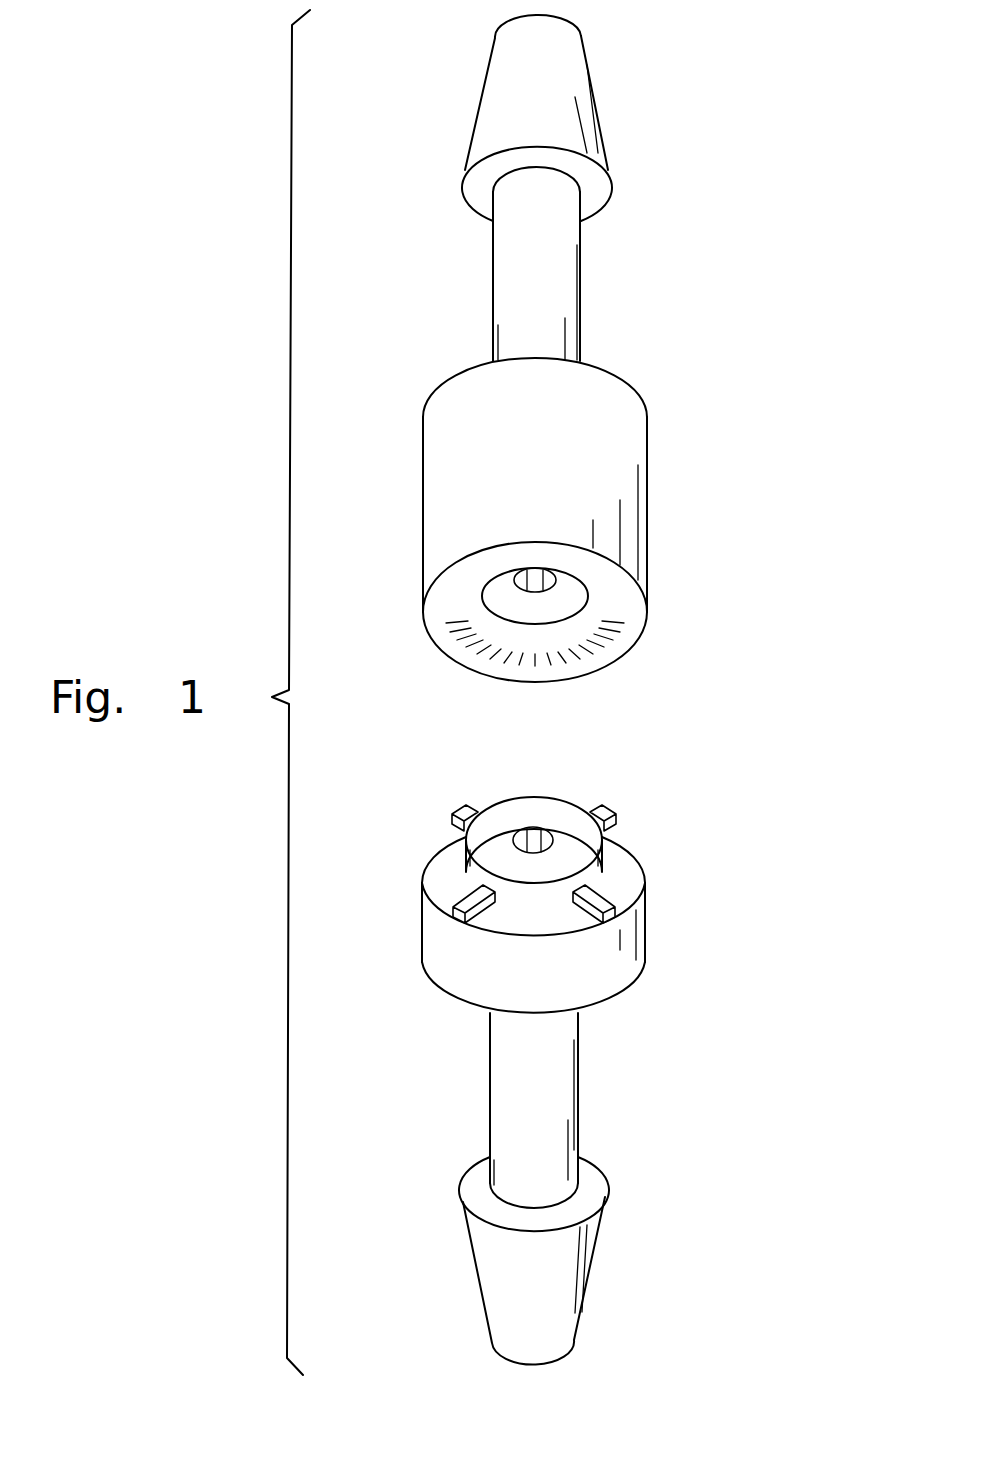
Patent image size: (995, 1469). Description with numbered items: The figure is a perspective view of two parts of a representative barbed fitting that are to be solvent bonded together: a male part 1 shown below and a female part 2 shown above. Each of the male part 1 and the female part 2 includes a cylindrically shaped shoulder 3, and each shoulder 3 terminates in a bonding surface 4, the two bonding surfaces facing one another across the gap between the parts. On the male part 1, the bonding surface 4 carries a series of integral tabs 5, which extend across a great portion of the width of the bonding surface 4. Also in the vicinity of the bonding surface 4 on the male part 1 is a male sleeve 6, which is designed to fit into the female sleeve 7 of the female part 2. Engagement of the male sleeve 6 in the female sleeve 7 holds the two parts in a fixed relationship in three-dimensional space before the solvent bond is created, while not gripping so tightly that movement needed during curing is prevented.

The male part 1 is at (566, 1058).
The female part 2 is at (561, 523).
The cylindrically shaped shoulder 3 is at (448, 488).
The bonding surface 4 is at (447, 612).
The tabs 5 is at (533, 838).
The male sleeve 6 is at (597, 875).
The female sleeve 7 is at (573, 628).